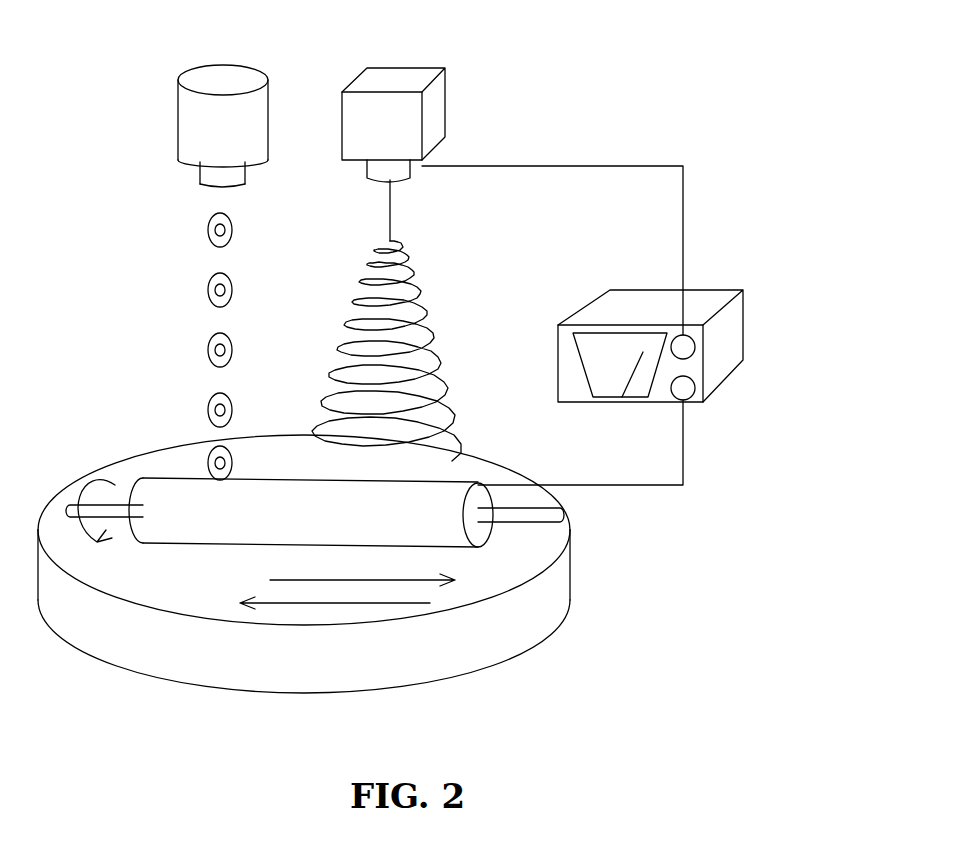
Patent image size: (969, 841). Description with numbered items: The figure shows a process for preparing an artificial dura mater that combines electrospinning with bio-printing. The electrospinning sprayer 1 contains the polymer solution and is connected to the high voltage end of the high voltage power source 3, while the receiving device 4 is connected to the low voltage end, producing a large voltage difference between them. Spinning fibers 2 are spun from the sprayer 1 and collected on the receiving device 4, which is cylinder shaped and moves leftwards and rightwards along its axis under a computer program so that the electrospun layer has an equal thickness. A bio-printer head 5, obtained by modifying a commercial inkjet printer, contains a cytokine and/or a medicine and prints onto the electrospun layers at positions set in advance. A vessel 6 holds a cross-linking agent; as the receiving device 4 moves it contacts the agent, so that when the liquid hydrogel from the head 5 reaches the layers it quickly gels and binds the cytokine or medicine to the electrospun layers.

The electrospinning sprayer 1 is at (402, 80).
The spinning fibers 2 is at (398, 335).
The high voltage power source 3 is at (698, 305).
The receiving device 4 is at (168, 498).
The bio-printer head 5 is at (224, 78).
The vessel 6 is at (548, 588).